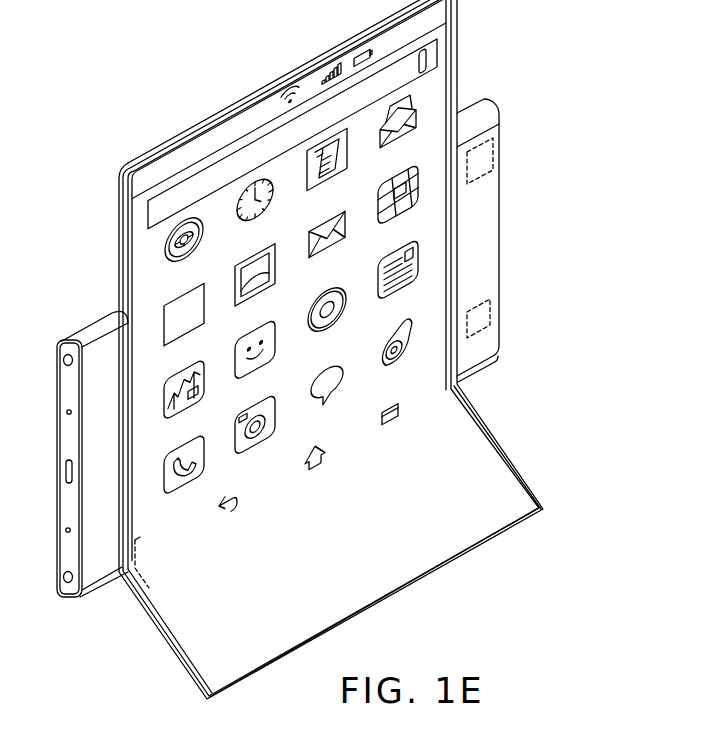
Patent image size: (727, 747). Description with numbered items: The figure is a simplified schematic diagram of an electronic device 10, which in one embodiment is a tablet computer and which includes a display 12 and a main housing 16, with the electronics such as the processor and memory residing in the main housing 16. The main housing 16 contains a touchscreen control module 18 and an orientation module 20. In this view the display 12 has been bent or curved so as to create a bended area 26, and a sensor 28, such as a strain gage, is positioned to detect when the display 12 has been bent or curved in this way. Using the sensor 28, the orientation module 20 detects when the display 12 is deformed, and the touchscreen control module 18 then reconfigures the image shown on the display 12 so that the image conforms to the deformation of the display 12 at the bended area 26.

The electronic device 10 is at (590, 153).
The display 12 is at (216, 148).
The main housing 16 is at (95, 335).
The touchscreen control module 18 is at (494, 150).
The orientation module 20 is at (492, 310).
The bended area 26 is at (495, 470).
The sensor 28 is at (150, 580).